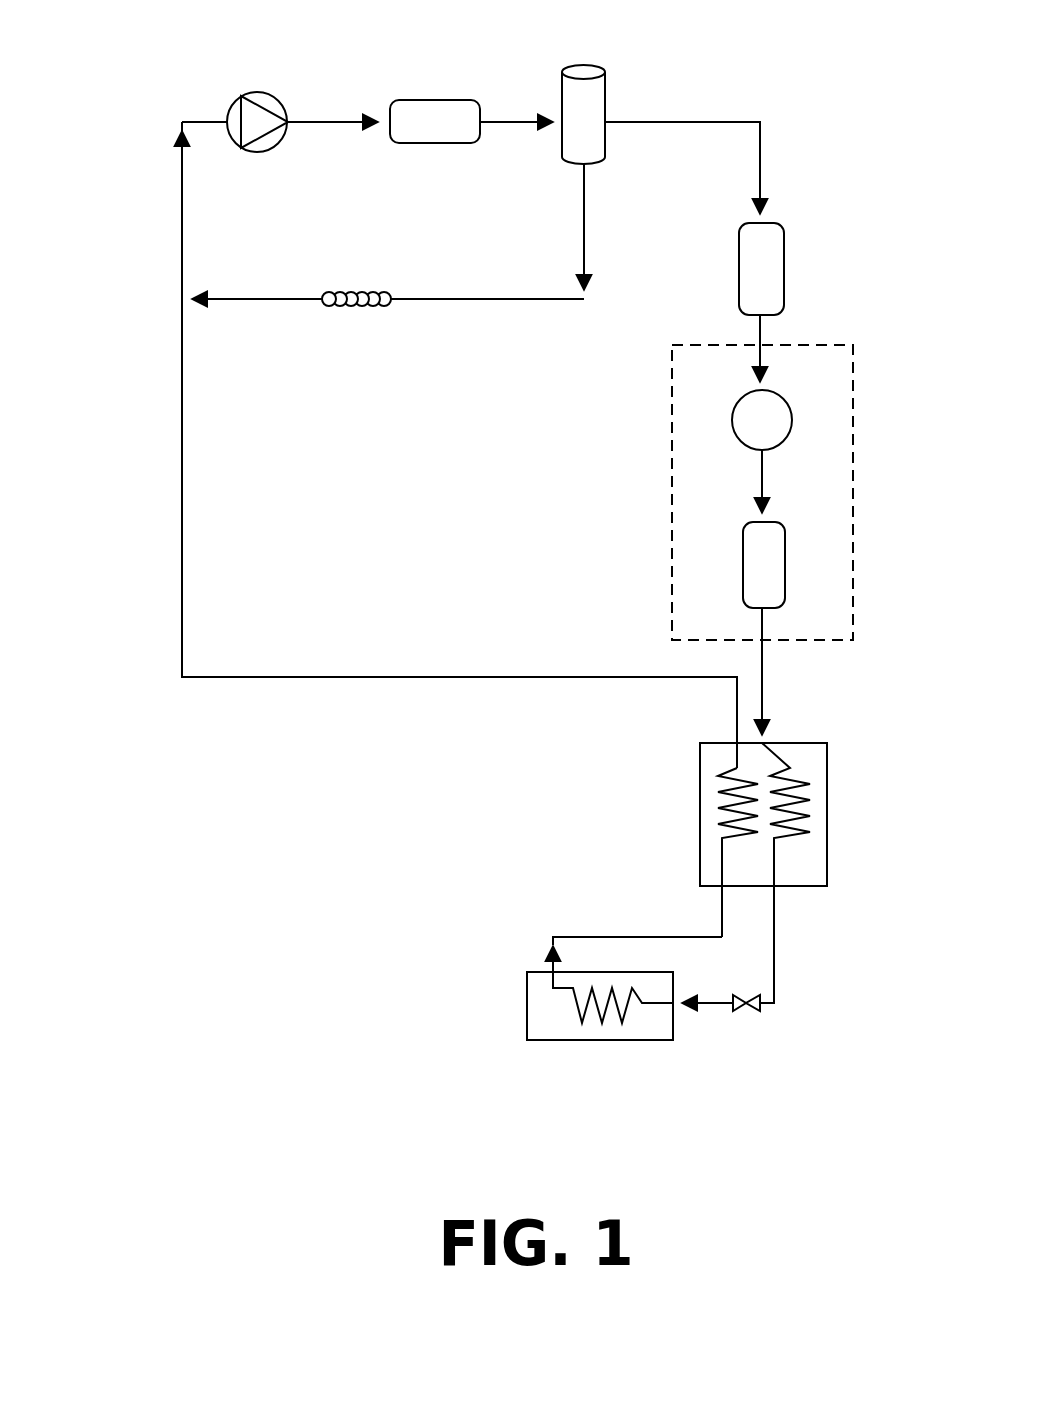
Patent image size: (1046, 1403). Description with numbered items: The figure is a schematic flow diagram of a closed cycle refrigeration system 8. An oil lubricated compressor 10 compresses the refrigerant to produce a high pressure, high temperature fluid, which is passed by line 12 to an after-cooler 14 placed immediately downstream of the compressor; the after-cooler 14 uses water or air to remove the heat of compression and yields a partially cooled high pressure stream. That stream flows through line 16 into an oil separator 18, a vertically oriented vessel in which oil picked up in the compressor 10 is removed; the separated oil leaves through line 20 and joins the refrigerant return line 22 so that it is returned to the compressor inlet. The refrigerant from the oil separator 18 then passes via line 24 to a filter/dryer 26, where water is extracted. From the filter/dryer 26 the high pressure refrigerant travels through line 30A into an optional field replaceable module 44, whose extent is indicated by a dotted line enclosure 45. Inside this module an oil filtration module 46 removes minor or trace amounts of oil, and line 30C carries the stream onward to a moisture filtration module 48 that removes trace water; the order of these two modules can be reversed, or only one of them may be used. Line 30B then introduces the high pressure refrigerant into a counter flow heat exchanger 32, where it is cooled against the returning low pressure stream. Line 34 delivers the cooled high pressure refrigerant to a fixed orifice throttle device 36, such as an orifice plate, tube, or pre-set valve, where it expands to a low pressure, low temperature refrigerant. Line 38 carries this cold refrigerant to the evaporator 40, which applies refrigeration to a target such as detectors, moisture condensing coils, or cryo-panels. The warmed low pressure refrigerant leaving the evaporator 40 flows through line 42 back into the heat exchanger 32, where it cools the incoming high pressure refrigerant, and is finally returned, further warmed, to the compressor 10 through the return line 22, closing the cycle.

The closed cycle refrigeration system 8 is at (142, 447).
The oil lubricated compressor 10 is at (243, 97).
The line 12 is at (329, 120).
The after-cooler 14 is at (437, 100).
The line 16 is at (515, 120).
The oil separator 18 is at (583, 65).
The line 20 is at (436, 298).
The refrigerant return line 22 is at (184, 403).
The line 24 is at (762, 168).
The filter/dryer 26 is at (785, 268).
The line 30A is at (762, 336).
The line 30B is at (764, 696).
The line 30C is at (764, 482).
The counter flow heat exchanger 32 is at (828, 805).
The line 34 is at (776, 934).
The fixed orifice throttle device 36 is at (744, 1012).
The line 38 is at (703, 1005).
The evaporator 40 is at (590, 1041).
The line 42 is at (620, 936).
The field replaceable module 44 is at (662, 585).
The dotted line enclosure 45 is at (853, 616).
The oil filtration module 46 is at (793, 421).
The moisture filtration module 48 is at (786, 569).